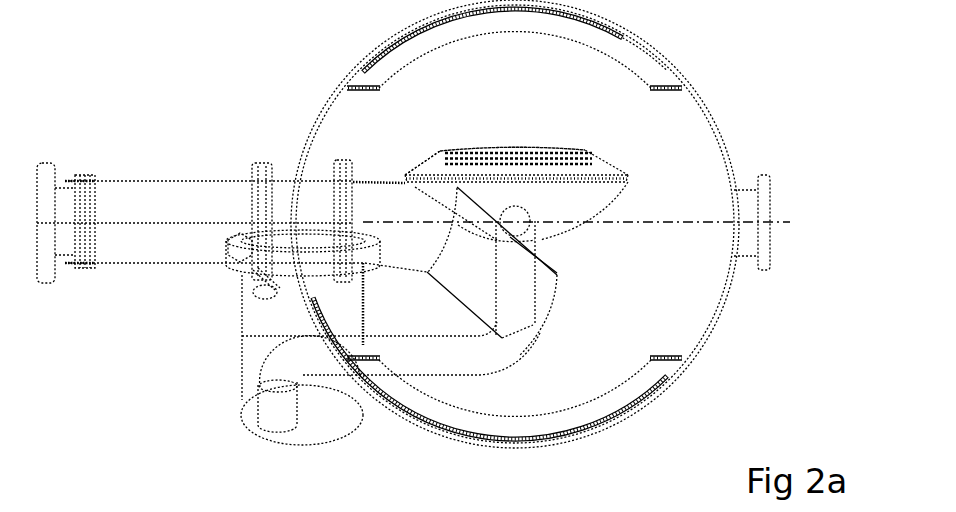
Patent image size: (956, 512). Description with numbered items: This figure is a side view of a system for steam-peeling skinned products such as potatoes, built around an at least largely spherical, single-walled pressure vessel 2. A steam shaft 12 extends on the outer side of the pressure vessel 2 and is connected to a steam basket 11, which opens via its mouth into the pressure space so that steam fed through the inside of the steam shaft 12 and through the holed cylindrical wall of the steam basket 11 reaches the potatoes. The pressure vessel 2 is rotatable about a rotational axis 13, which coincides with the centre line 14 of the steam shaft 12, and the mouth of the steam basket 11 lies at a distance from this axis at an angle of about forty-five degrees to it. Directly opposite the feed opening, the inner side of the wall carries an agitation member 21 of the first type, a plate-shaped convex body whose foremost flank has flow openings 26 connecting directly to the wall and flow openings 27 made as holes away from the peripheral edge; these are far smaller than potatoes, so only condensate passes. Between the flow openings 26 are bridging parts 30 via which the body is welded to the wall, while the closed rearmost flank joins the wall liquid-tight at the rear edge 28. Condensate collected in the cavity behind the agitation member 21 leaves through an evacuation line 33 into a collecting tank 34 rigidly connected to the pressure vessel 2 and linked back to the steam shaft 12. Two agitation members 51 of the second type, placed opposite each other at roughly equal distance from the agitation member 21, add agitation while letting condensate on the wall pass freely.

The pressure vessel 2 is at (710, 83).
The steam basket 11 is at (547, 283).
The steam shaft 12 is at (140, 253).
The rotational axis 13 is at (703, 223).
The centre line of the steam shaft 14 is at (175, 225).
The agitation member of a first type 21 is at (616, 147).
The flow openings 26 is at (473, 152).
The flow openings 27 is at (582, 137).
The rear edge 28 is at (577, 224).
The bridging parts 30 is at (587, 153).
The evacuation line 33 is at (412, 350).
The collecting tank 34 is at (260, 338).
The agitation members of the second type 51 is at (511, 43).